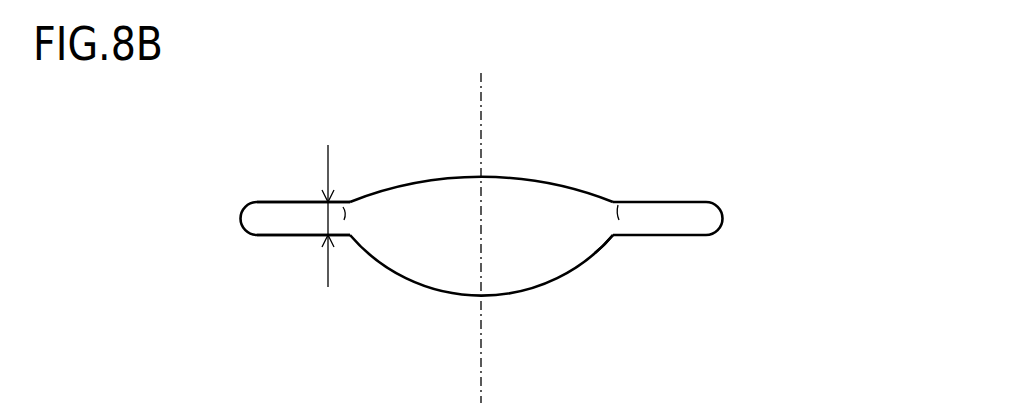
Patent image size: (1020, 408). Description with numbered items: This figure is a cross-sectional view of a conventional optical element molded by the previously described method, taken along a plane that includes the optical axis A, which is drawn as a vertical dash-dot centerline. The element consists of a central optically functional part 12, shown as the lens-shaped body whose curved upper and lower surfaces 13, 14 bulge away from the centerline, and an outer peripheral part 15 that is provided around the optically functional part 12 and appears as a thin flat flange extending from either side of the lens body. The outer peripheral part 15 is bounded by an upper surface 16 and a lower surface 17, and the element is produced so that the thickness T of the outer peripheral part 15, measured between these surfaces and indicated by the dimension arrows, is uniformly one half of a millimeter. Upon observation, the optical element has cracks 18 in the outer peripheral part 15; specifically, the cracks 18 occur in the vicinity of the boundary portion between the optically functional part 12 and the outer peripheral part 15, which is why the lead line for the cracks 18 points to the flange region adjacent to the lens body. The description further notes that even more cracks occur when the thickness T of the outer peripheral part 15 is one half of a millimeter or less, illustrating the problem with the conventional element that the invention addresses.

The optical axis A is at (481, 117).
The optically functional part 12 is at (505, 262).
The first lens surface 13 is at (543, 178).
The second lens surface 14 is at (595, 253).
The outer peripheral part 15 is at (262, 217).
The flange upper surface 16 is at (273, 200).
The flange lower surface 17 is at (275, 236).
The cracks 18 is at (620, 211).
The thickness T is at (318, 216).